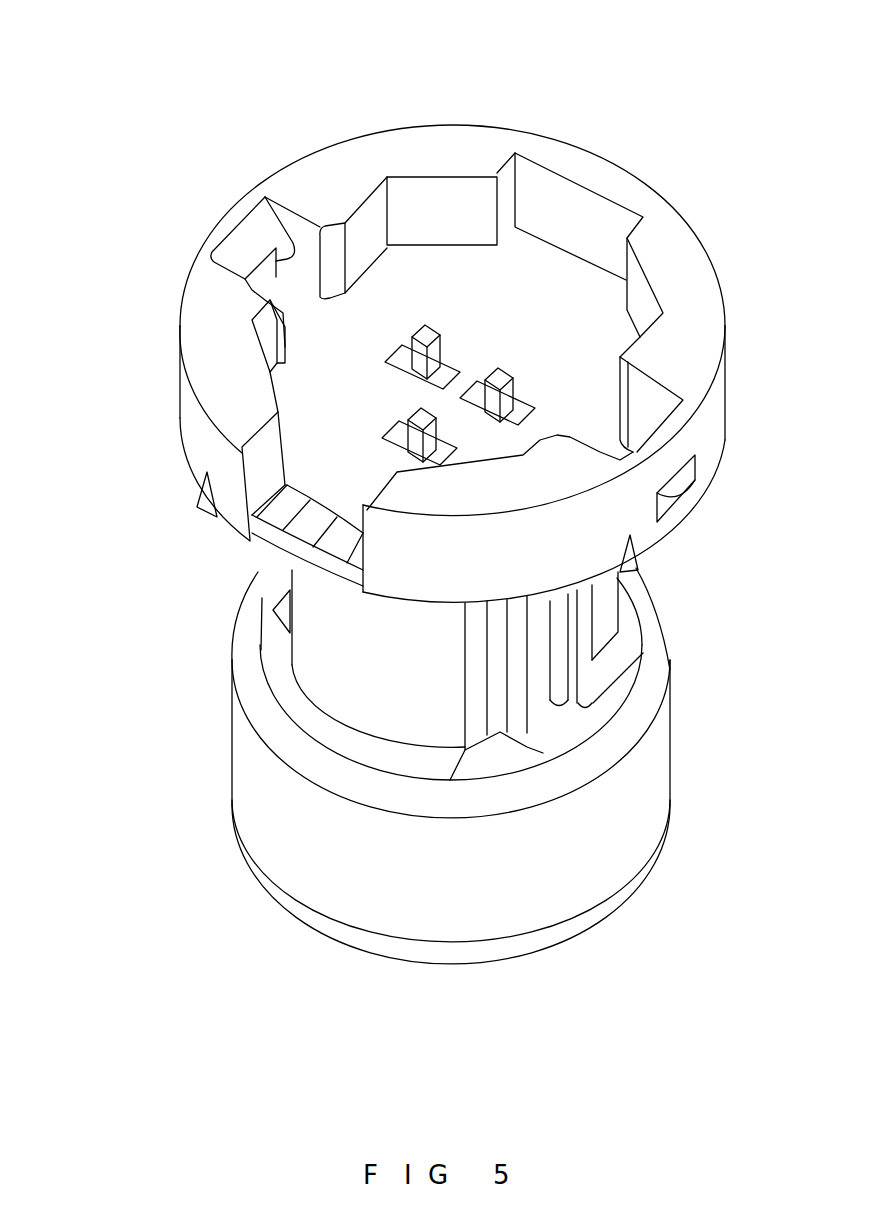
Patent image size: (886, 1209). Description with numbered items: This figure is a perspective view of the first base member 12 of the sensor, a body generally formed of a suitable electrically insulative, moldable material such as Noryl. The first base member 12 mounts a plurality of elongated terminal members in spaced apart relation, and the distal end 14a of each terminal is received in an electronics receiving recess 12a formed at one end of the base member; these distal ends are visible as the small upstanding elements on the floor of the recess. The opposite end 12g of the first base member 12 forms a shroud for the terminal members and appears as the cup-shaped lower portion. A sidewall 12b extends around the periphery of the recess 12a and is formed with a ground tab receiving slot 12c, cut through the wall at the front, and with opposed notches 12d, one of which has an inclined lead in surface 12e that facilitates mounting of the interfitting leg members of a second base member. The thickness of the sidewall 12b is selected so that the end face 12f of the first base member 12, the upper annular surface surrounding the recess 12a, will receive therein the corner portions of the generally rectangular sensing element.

The first base member 12 is at (157, 403).
The electronics receiving recess 12a is at (596, 306).
The sidewall 12b is at (443, 205).
The ground tab receiving slot 12c is at (268, 473).
The opposed notches 12d is at (275, 235).
The inclined lead in surface 12e is at (245, 240).
The end face 12f is at (337, 163).
The opposite end 12g is at (628, 794).
The distal end 14a is at (423, 410).